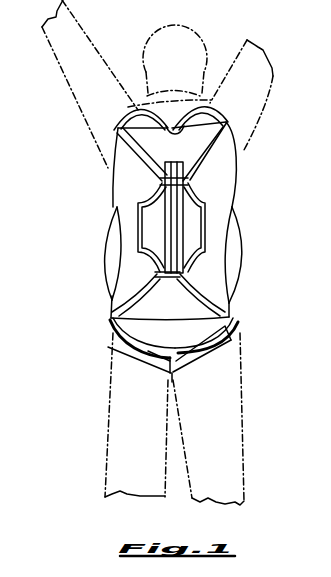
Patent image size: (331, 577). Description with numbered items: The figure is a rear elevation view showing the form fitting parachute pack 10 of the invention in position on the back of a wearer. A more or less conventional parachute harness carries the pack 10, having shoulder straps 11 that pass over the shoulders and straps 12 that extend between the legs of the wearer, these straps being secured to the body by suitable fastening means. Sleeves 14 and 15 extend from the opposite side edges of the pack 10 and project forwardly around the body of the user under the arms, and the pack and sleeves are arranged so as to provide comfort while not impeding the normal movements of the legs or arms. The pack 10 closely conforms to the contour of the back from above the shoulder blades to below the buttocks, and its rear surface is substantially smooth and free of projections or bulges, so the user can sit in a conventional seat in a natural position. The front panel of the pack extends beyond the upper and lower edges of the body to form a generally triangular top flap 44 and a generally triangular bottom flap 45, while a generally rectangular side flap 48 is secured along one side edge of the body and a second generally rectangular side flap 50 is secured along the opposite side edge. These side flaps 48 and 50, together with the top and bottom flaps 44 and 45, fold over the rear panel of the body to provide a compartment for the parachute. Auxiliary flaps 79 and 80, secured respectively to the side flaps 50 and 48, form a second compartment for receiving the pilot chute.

The form fitting parachute pack 10 is at (235, 185).
The shoulder straps 11 is at (184, 128).
The straps 12 is at (228, 339).
The sleeve 14 is at (243, 258).
The sleeve 15 is at (108, 263).
The top flap 44 is at (158, 149).
The bottom flap 45 is at (155, 288).
The side flap 48 is at (118, 296).
The second side flap 50 is at (217, 287).
The auxiliary flap 79 is at (191, 208).
The auxiliary flap 80 is at (156, 207).